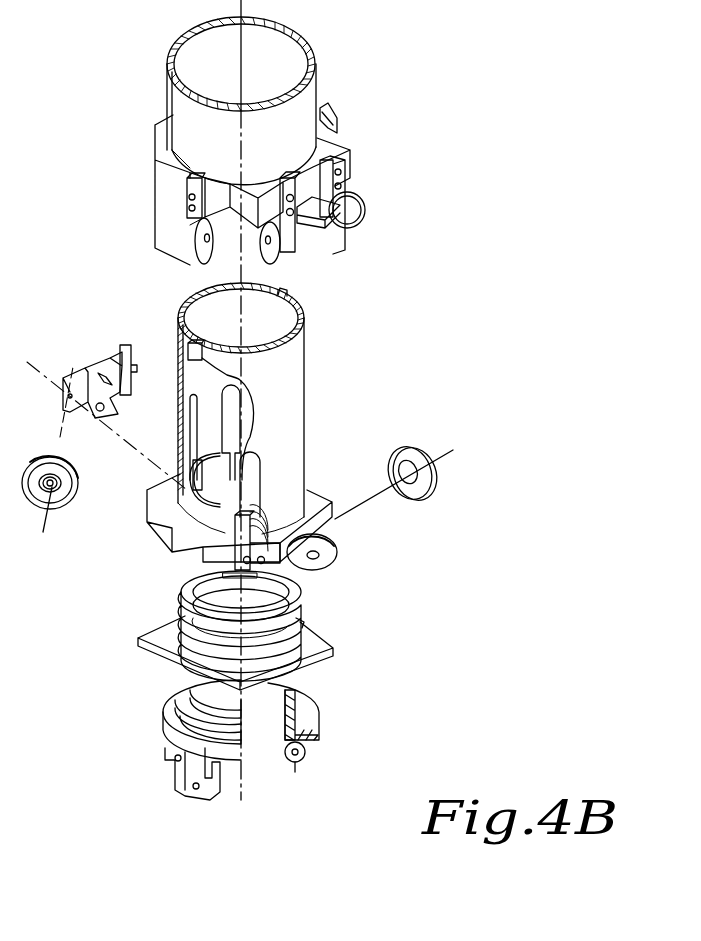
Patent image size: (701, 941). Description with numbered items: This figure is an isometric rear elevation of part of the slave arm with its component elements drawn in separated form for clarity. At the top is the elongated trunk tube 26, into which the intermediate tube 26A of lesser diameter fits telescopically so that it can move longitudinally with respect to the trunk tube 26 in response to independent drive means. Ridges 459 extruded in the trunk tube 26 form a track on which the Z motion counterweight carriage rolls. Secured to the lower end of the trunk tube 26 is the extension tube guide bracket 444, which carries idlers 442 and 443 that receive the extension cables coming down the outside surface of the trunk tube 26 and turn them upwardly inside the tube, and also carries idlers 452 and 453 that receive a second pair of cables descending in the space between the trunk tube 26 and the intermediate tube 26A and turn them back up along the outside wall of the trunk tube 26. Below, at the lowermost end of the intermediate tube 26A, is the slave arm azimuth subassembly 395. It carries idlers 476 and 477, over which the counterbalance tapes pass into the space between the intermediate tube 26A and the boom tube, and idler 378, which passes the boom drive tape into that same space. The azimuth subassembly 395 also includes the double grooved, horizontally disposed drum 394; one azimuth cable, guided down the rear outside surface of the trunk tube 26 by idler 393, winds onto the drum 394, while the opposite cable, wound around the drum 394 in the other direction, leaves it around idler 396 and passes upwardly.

The trunk tube 26 is at (167, 83).
The intermediate tube 26A is at (298, 358).
The ridges 459 is at (272, 24).
The idler 443 is at (337, 135).
The extension tube guide bracket 444 is at (163, 217).
The idler 442 is at (197, 263).
The idler 452 is at (283, 253).
The idler 453 is at (337, 184).
The idler 477 is at (127, 345).
The idler 476 is at (52, 487).
The idler 378 is at (267, 522).
The idler 393 is at (430, 466).
The azimuth assembly 395 is at (163, 535).
The idler 396 is at (331, 563).
The drum 394 is at (315, 707).